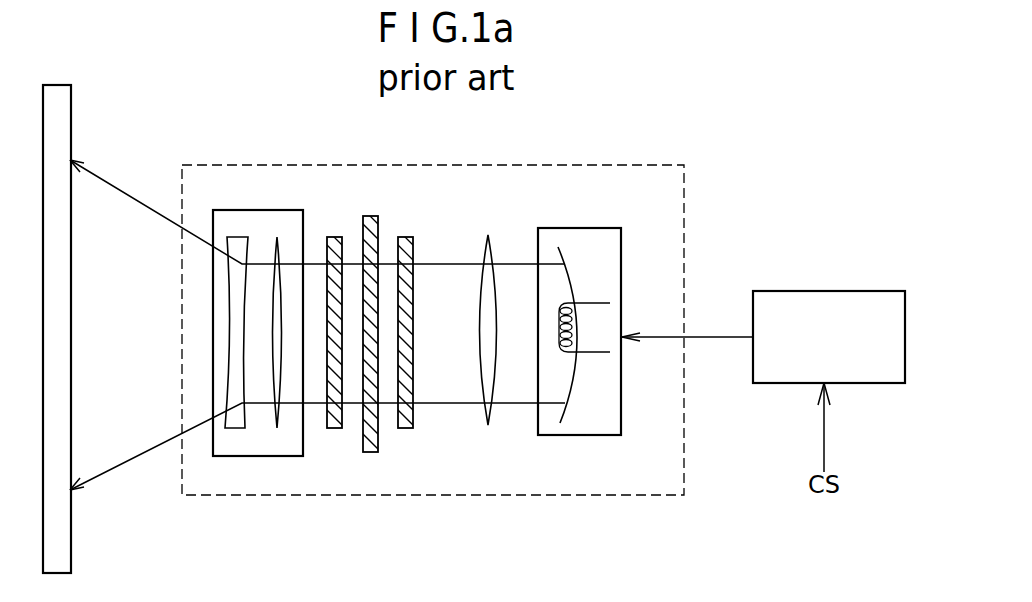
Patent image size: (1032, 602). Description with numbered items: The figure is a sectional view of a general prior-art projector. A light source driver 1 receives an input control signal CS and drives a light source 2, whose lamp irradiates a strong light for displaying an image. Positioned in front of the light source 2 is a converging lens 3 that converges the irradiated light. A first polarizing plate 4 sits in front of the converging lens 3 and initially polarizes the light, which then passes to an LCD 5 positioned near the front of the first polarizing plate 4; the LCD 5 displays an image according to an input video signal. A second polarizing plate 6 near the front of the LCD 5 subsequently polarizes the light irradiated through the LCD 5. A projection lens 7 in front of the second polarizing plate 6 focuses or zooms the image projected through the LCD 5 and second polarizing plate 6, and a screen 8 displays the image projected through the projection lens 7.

The light source driver 1 is at (822, 300).
The light source 2 is at (580, 240).
The converging lens 3 is at (488, 242).
The first polarizing plate 4 is at (405, 237).
The LCD 5 is at (371, 216).
The second polarizing plate 6 is at (334, 237).
The projection lens 7 is at (255, 218).
The screen 8 is at (58, 350).